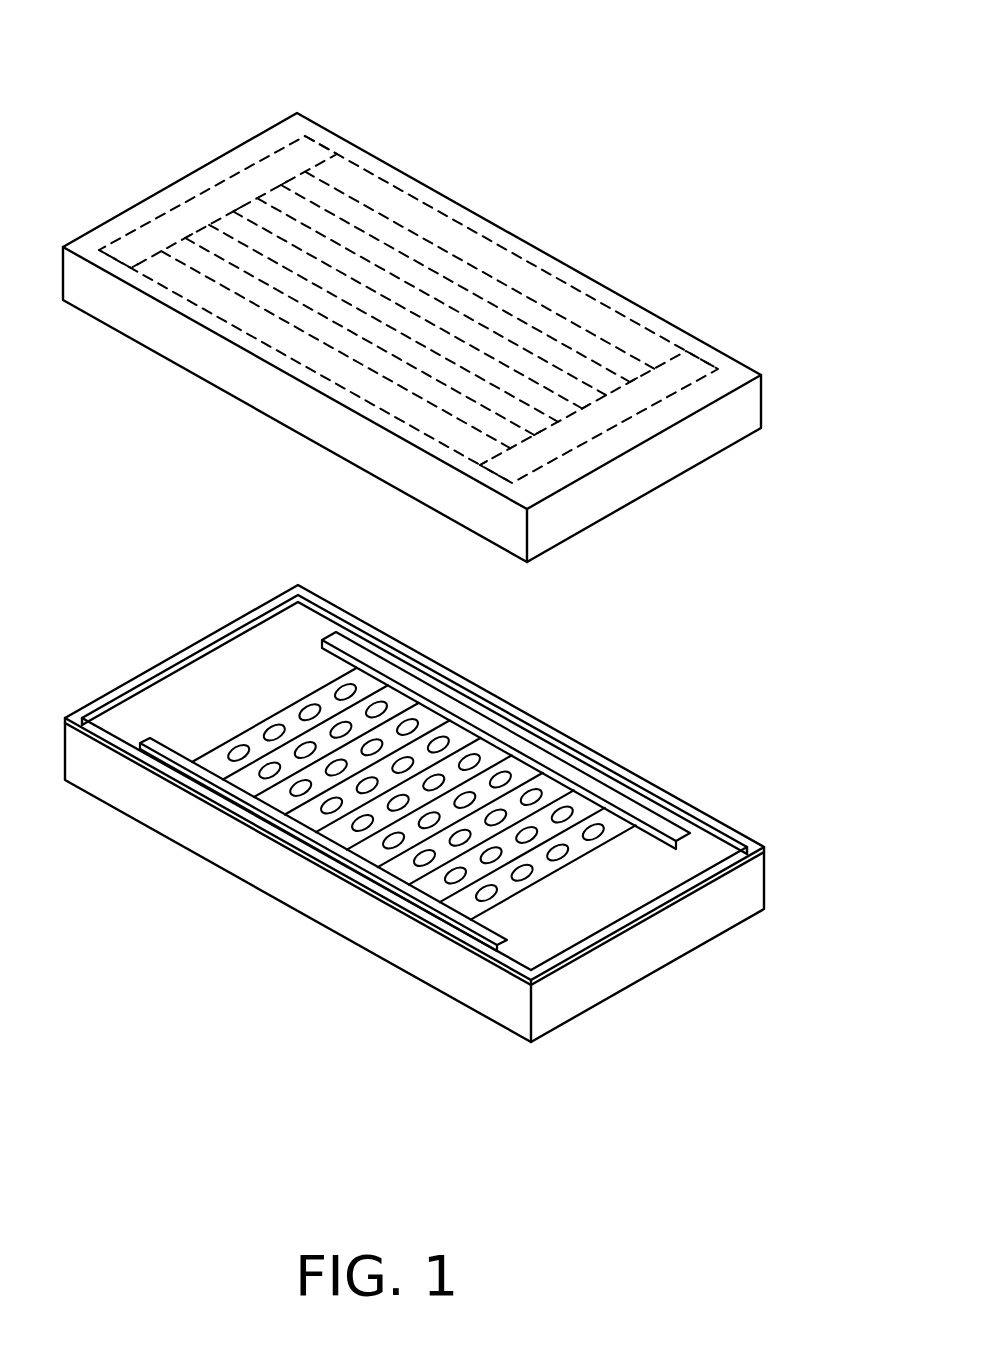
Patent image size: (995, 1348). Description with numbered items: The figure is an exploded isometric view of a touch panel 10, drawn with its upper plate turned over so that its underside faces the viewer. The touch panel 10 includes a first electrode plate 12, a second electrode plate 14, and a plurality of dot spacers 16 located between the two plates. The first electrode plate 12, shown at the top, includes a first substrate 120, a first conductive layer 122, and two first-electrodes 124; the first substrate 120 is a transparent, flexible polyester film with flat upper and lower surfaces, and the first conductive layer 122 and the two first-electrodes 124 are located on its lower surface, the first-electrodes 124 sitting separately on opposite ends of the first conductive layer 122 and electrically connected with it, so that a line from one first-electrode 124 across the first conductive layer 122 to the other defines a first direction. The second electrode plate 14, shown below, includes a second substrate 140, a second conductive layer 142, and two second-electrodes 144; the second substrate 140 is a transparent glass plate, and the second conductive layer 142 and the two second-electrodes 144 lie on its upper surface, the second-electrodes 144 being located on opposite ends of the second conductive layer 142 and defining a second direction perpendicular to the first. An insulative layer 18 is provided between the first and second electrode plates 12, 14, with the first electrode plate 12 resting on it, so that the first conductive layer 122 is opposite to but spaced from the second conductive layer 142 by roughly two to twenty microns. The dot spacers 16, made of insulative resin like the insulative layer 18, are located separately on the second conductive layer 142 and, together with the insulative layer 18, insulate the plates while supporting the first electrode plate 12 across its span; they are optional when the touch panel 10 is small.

The touch panel 10 is at (417, 36).
The first electrode plate 12 is at (655, 280).
The first substrate 120 is at (742, 408).
The first conductive layer 122 is at (425, 252).
The first-electrodes 124 is at (218, 195).
The second electrode plate 14 is at (631, 1014).
The second substrate 140 is at (372, 932).
The second conductive layer 142 is at (270, 715).
The second-electrodes 144 is at (473, 722).
The dot spacers 16 is at (598, 824).
The insulative layer 18 is at (272, 845).